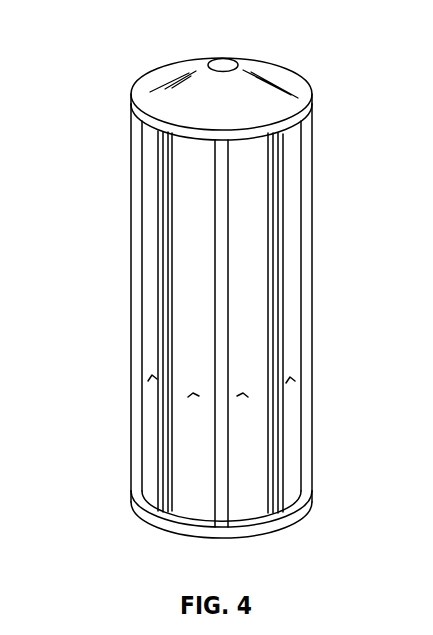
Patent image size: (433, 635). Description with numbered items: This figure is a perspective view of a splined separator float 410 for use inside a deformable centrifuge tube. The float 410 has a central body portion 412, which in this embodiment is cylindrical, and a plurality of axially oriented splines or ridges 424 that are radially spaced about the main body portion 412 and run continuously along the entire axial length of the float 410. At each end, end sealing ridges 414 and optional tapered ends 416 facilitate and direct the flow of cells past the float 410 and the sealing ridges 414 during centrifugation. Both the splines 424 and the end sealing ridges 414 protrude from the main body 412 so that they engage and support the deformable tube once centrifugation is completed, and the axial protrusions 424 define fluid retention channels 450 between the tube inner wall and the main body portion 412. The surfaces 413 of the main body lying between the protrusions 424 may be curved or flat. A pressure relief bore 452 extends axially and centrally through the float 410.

The splined separator float 410 is at (330, 186).
The central body portion 412 is at (293, 356).
The surfaces of the main body portion 413 is at (193, 394).
The end sealing ridges 414 is at (131, 110).
The tapered ends 416 is at (273, 78).
The axially oriented splines 424 is at (160, 263).
The fluid retention channels 450 is at (250, 258).
The pressure relief bore 452 is at (222, 59).